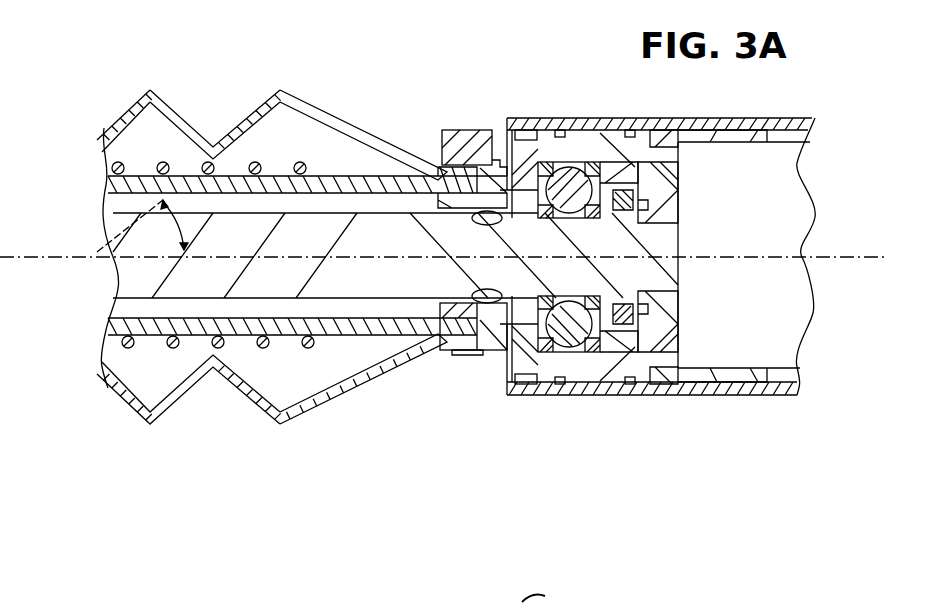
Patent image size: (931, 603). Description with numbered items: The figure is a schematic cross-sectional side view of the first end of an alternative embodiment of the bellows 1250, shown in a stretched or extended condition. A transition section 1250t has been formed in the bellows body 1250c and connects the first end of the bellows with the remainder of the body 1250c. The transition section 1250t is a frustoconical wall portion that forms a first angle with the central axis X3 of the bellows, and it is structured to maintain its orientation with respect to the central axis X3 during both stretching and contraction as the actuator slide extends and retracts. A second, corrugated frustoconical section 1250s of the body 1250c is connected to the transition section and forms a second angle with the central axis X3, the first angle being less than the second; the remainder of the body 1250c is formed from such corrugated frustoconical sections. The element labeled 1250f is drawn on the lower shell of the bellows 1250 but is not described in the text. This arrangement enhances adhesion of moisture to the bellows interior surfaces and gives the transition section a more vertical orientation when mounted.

The bellows 1250 is at (480, 166).
The bellows body 1250c is at (115, 110).
The second corrugated frustoconical section 1250s is at (235, 113).
The transition section 1250t is at (324, 100).
The lower corrugated shell flange 1250f is at (138, 377).
The central axis X3 is at (878, 248).